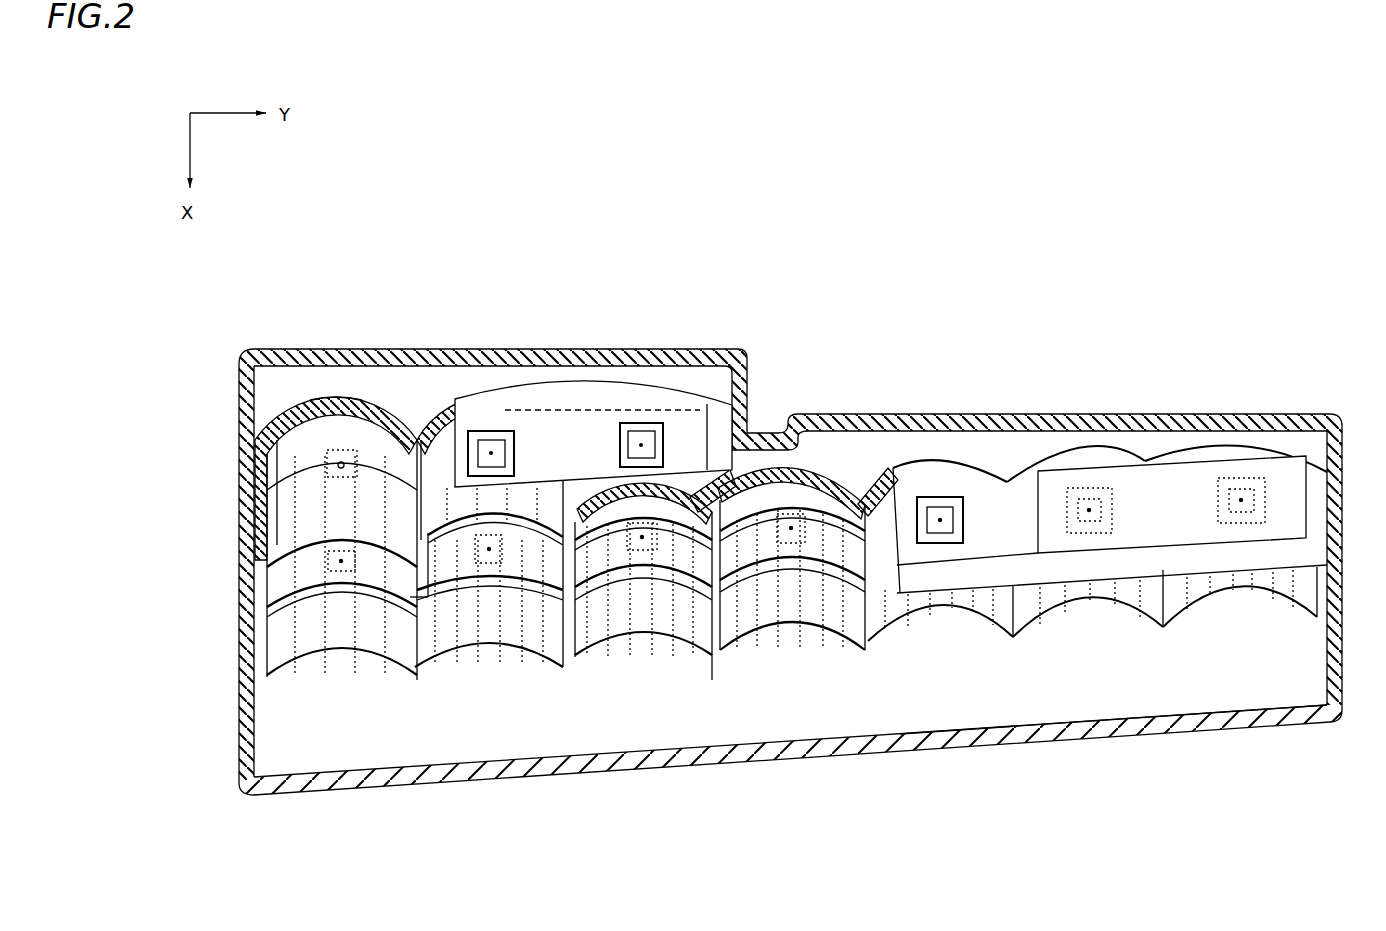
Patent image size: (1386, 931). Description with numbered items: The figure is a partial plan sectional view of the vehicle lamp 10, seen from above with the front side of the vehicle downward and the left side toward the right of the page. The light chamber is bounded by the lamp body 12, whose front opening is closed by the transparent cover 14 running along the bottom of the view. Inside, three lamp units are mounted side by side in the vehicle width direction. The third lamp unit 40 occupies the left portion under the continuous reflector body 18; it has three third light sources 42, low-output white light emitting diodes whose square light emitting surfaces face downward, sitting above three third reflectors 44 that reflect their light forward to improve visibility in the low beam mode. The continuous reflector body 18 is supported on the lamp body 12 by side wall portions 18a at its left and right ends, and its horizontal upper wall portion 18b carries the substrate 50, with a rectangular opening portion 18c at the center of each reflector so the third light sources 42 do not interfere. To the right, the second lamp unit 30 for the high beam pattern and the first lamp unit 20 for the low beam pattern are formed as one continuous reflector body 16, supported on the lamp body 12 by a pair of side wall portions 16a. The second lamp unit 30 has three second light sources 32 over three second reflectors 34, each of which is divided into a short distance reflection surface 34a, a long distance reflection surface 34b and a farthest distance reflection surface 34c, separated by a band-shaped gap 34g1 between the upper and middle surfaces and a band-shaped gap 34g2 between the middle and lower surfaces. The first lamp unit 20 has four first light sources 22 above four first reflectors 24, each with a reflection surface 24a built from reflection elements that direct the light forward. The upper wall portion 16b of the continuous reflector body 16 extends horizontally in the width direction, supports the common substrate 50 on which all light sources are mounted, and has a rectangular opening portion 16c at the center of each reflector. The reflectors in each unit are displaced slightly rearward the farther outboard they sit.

The vehicle lamp 10 is at (1160, 230).
The lamp body 12 is at (1270, 418).
The transparent cover 14 is at (1187, 730).
The continuous reflector body 16 is at (972, 460).
The side wall portions 16a is at (262, 612).
The upper wall portion 16b is at (926, 468).
The opening portion 16c is at (961, 515).
The continuous reflector body 18 is at (740, 357).
The side wall portions 18a is at (262, 472).
The upper wall portion 18b is at (590, 392).
The opening portion 18c is at (621, 441).
The first lamp unit 20 is at (1037, 657).
The first light sources 22 is at (788, 560).
The first reflectors 24 is at (795, 627).
The reflection surface 24a is at (810, 595).
The second lamp unit 30 is at (558, 690).
The second light sources 32 is at (325, 652).
The second reflectors 34 is at (343, 655).
The short distance reflection surface 34a is at (670, 596).
The long distance reflection surface 34b is at (532, 570).
The farthest distance reflection surface 34c is at (380, 632).
The band-shaped gap 34g1 is at (560, 527).
The band-shaped gap 34g2 is at (385, 560).
The third lamp unit 40 is at (412, 392).
The third light sources 42 is at (345, 440).
The third reflectors 44 is at (321, 383).
The substrate 50 is at (1147, 460).